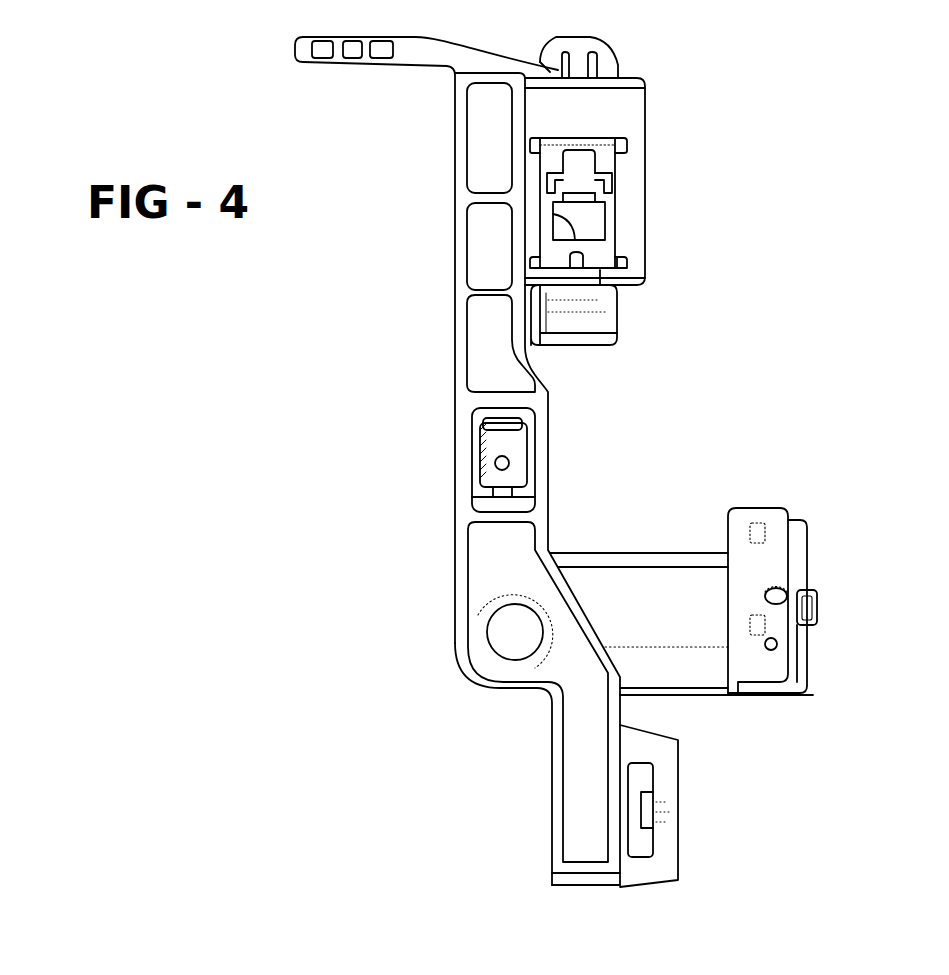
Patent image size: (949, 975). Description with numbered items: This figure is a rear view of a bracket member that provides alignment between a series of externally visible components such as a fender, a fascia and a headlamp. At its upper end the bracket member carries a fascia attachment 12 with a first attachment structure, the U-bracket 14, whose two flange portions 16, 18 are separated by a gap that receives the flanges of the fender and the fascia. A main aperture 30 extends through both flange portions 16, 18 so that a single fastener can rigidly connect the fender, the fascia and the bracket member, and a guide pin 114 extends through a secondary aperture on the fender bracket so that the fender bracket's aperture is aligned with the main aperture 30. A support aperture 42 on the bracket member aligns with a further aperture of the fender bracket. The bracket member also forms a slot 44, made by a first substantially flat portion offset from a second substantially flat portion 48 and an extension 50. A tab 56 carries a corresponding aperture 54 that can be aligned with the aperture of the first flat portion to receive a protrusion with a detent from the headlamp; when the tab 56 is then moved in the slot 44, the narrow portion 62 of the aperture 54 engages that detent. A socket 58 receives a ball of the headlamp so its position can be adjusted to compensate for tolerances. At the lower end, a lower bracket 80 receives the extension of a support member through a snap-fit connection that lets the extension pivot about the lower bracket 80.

The fascia attachment 12 is at (651, 562).
The U-bracket 14 is at (760, 503).
The flange portion 16 is at (743, 667).
The flange portion 18 is at (805, 683).
The main aperture 30 is at (773, 588).
The guide pin 114 is at (777, 642).
The support aperture 42 is at (509, 461).
The slot 44 is at (622, 262).
The second substantially flat portion 48 is at (600, 110).
The extension 50 is at (620, 278).
The corresponding aperture 54 is at (553, 216).
The tab 56 is at (600, 317).
The socket 58 is at (542, 637).
The narrow portion 62 is at (563, 167).
The lower bracket 80 is at (632, 843).